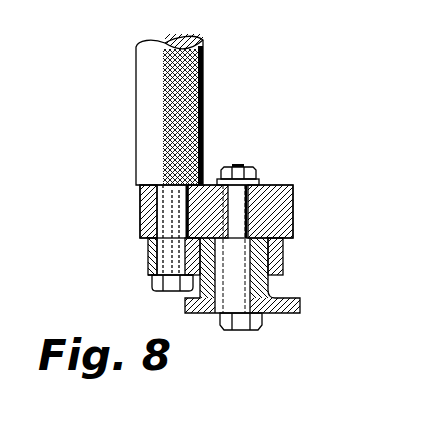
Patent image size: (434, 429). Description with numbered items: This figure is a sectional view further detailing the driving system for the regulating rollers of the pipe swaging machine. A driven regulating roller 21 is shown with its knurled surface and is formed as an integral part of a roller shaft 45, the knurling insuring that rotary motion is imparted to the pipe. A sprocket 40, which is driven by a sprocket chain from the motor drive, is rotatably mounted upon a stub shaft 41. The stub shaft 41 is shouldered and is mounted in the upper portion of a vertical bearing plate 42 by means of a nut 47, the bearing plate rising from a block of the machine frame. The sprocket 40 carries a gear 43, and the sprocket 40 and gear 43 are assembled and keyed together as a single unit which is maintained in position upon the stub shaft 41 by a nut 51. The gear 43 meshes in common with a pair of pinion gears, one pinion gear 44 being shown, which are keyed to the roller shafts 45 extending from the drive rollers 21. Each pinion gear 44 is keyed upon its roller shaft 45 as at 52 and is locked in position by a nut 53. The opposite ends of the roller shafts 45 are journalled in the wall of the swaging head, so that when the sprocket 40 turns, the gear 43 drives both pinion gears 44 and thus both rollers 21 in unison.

The driven regulating roller 21 is at (207, 82).
The sprocket 40 is at (270, 303).
The stub shaft 41 is at (238, 168).
The bearing plate 42 is at (283, 210).
The gear 43 is at (276, 265).
The pinion gear 44 is at (151, 262).
The roller shaft 45 is at (151, 233).
The nut 47 is at (259, 181).
The nut 51 is at (253, 321).
The key 52 is at (160, 272).
The nut 53 is at (160, 291).